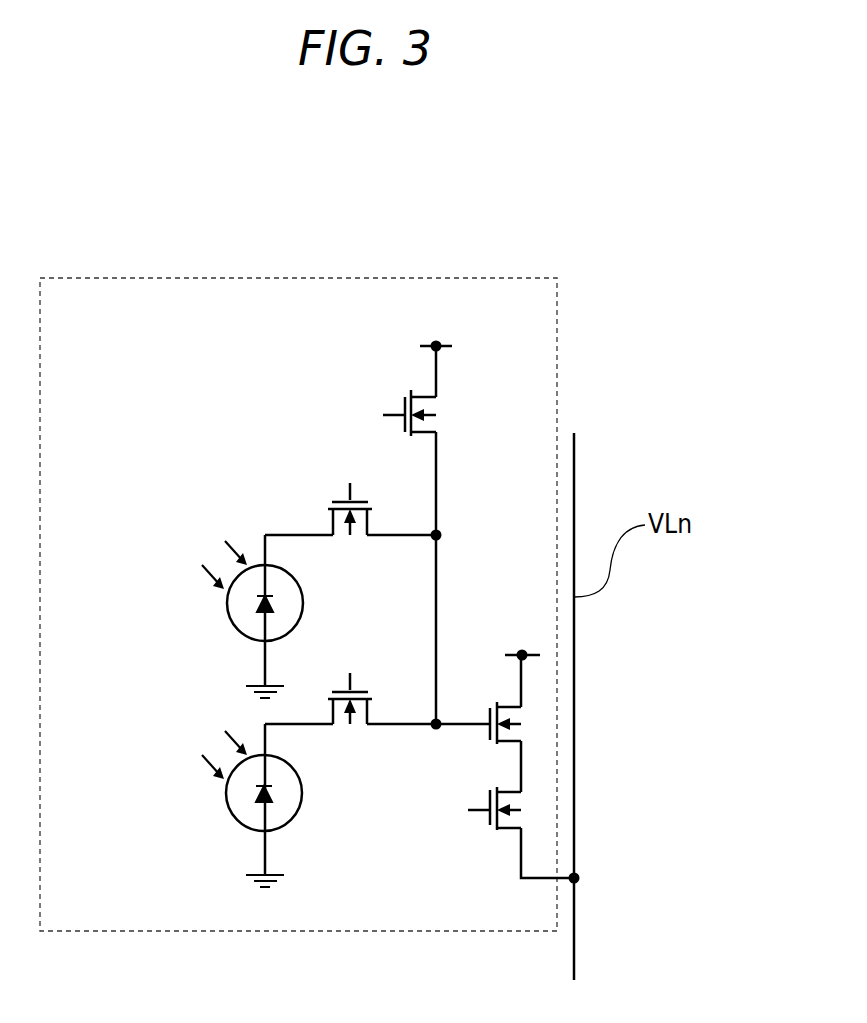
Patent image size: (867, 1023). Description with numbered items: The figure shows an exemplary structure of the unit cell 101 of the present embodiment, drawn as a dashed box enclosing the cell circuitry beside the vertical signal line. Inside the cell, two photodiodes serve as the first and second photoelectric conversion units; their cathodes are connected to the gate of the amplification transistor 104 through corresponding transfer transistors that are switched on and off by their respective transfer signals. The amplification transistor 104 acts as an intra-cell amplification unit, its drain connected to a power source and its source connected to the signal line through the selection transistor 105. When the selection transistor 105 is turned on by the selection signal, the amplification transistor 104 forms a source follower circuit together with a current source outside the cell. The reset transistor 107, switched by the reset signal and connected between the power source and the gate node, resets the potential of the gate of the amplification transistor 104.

The unit cell 101 is at (557, 360).
The amplification transistor 104 is at (525, 733).
The selection transistor 105 is at (525, 820).
The reset transistor 107 is at (392, 400).